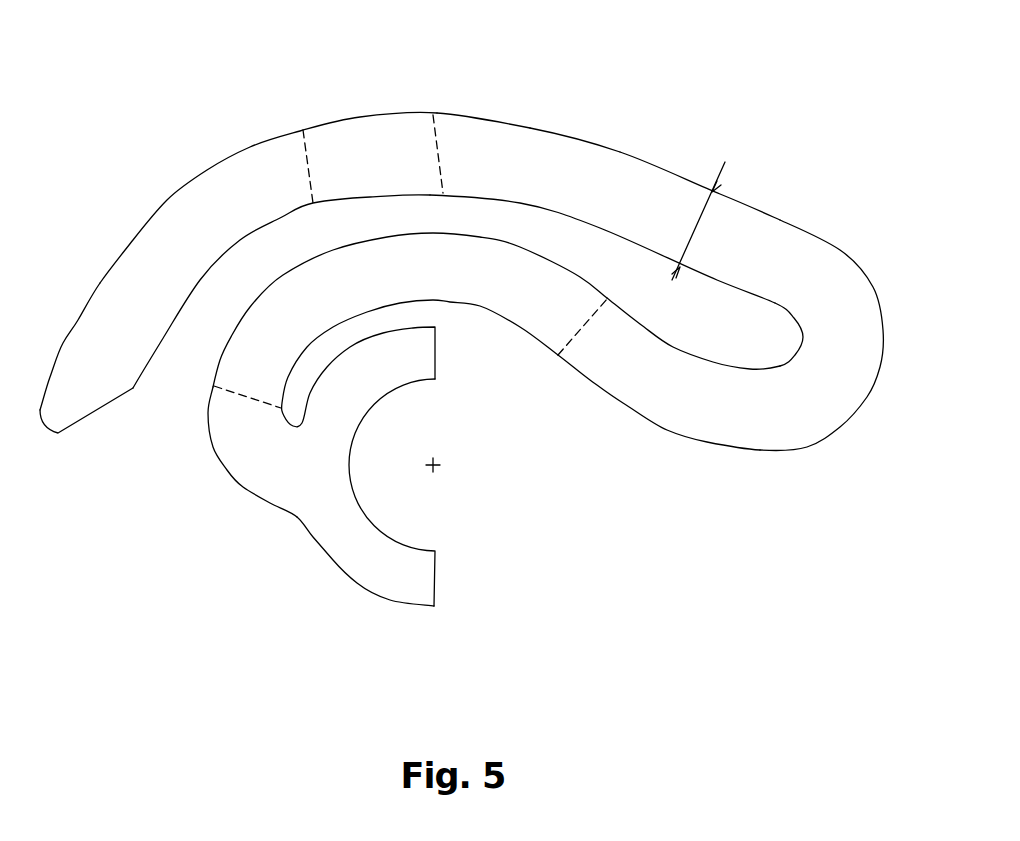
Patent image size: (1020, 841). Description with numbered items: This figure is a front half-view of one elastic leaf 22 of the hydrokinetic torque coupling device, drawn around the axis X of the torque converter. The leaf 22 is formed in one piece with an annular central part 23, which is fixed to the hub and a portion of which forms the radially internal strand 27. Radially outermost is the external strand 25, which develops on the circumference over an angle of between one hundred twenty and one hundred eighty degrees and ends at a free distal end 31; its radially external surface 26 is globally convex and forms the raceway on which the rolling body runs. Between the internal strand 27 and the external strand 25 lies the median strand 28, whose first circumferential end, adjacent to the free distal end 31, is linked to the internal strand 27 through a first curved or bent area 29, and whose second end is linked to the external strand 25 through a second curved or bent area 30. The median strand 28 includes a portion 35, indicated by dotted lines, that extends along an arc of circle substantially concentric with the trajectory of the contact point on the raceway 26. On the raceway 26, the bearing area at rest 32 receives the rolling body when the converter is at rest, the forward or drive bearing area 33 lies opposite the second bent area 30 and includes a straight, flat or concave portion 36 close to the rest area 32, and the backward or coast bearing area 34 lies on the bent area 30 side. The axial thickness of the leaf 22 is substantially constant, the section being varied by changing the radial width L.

The elastic leaf 22 is at (677, 130).
The annular central part 23 is at (400, 570).
The radially external strand 25 is at (517, 163).
The radially external surface 26 is at (617, 147).
The radially internal strand 27 is at (378, 381).
The radially median strand 28 is at (657, 388).
The first curved or bent area 29 is at (245, 457).
The second curved or bent area 30 is at (823, 385).
The free distal end 31 is at (88, 378).
The bearing area at rest 32 is at (433, 114).
The forward or drive bearing area 33 is at (248, 143).
The backward or coast bearing area 34 is at (503, 117).
The semi-circular portion 35 is at (397, 265).
The straight, flat or concave portion 36 is at (323, 123).
The width L is at (710, 217).
The axis X is at (440, 462).